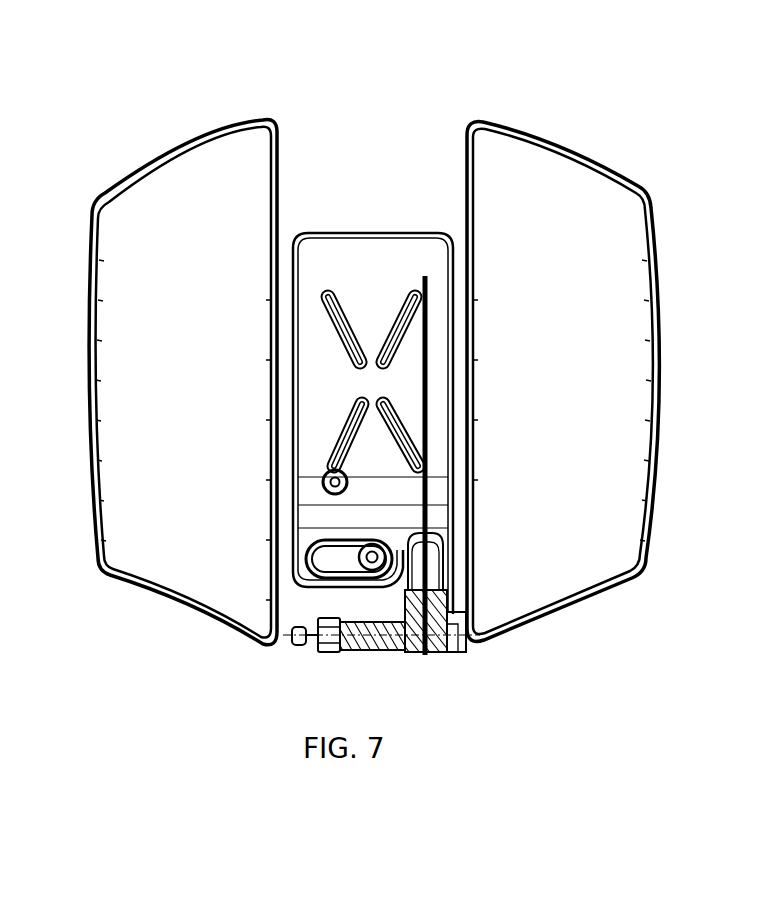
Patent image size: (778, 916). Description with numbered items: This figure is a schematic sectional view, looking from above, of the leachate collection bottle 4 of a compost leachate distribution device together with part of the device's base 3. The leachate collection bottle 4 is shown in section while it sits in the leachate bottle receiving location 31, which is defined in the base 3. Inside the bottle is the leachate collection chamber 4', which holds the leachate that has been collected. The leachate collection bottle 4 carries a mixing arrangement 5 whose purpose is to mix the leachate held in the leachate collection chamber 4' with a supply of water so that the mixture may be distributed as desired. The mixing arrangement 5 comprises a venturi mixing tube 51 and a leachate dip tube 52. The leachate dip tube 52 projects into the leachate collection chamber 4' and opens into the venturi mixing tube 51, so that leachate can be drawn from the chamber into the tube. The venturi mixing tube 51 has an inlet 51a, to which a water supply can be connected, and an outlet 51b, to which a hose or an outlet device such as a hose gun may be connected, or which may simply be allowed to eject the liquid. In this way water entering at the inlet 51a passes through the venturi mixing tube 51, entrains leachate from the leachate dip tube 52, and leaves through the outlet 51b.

The base 3 is at (110, 588).
The leachate bottle receiving location 31 is at (290, 657).
The leachate collection bottle 4 is at (449, 344).
The leachate collection chamber 4' is at (373, 317).
The mixing arrangement 5 is at (453, 660).
The venturi mixing tube 51 is at (403, 653).
The inlet 51a is at (483, 652).
The outlet 51b is at (307, 650).
The leachate dip tube 52 is at (473, 510).